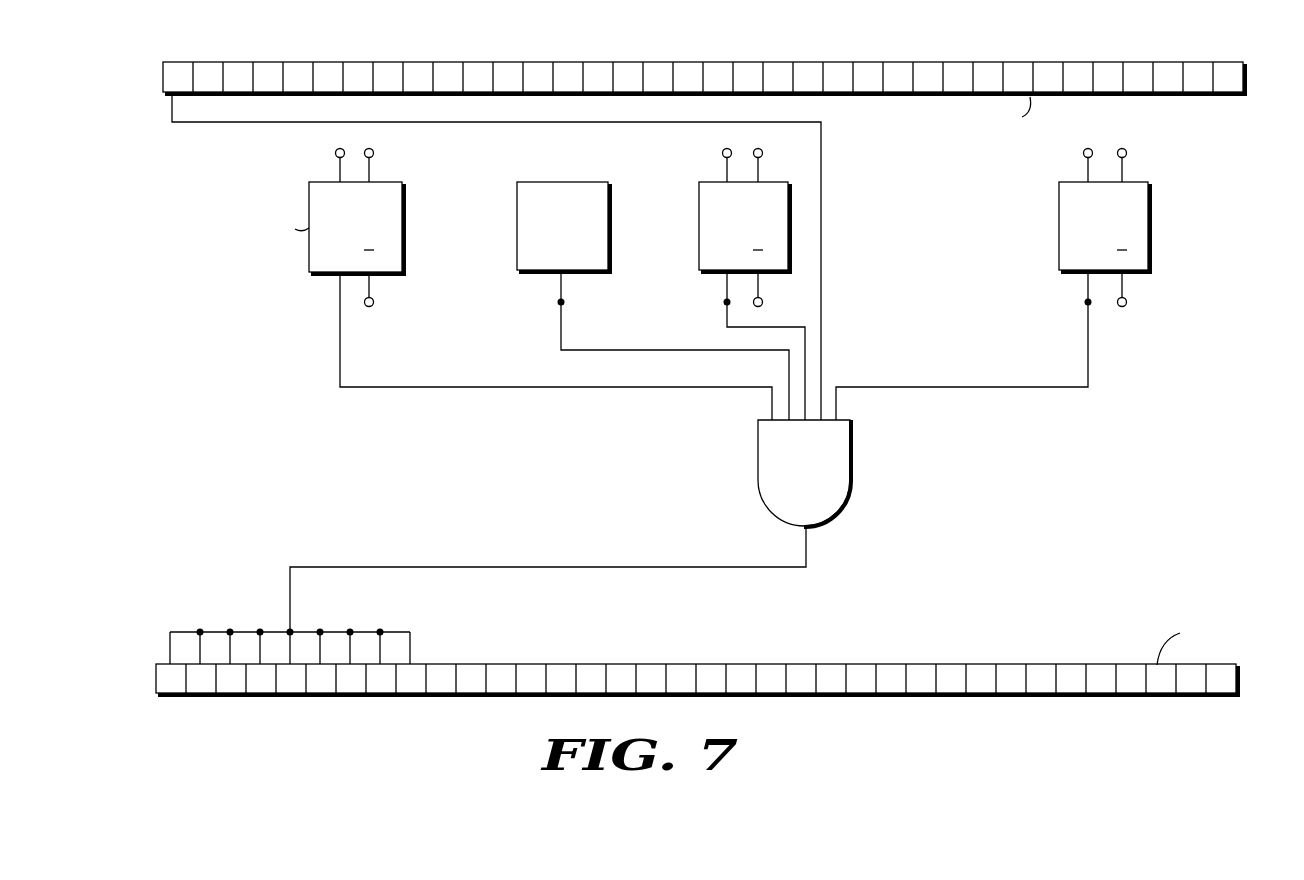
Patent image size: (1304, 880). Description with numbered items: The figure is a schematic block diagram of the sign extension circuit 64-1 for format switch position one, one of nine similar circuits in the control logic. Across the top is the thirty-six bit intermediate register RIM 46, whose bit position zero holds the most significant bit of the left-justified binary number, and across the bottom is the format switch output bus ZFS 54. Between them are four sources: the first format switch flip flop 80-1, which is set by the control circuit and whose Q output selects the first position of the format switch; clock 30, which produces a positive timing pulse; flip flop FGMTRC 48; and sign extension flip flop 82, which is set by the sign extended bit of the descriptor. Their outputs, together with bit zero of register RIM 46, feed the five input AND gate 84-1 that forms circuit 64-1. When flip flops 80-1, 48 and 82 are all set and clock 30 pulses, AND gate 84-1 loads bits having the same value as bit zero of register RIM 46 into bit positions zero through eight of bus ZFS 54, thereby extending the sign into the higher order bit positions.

The intermediate register RIM 46 is at (1180, 94).
The format switch output bus ZFS 54 is at (1175, 694).
The flip flop FS-1 80-1 is at (402, 233).
The clock 30 is at (540, 182).
The flip flop FGMTRC 48 is at (710, 182).
The sign extension flip flop 82 is at (1148, 237).
The five input AND gate 84-1 is at (852, 484).
The sign extension circuit 64-1 is at (618, 460).